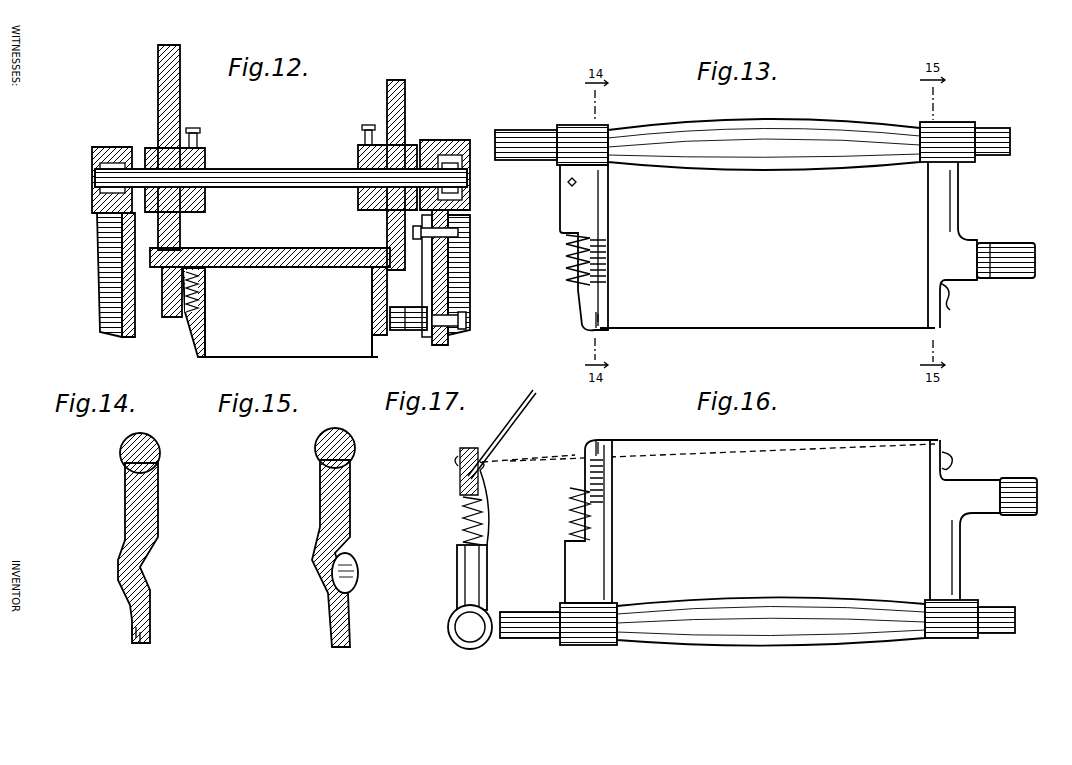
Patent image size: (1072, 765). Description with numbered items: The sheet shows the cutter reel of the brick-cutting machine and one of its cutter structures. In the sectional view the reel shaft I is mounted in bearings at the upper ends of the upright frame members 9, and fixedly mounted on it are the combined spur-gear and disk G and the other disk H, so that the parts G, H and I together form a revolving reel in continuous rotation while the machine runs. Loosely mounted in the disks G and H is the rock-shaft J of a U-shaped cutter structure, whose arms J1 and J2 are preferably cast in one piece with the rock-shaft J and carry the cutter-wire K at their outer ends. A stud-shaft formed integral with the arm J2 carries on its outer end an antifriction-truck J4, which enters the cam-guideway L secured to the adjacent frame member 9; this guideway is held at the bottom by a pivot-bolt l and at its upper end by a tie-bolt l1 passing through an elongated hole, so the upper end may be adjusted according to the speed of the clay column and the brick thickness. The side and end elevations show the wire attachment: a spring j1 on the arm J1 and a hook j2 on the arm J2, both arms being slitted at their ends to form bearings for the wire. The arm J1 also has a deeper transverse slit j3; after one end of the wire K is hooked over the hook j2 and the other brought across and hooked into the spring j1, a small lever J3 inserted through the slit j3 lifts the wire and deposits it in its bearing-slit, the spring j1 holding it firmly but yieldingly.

In FIG. 12, the combined spur-gear and disk G is at (181, 116).
In FIG. 12, the disk H is at (408, 108).
In FIG. 12, the reel shaft I is at (276, 168).
In FIG. 12, the rock-shaft J is at (318, 263).
In FIG. 13, the rock-shaft J is at (760, 167).
In FIG. 16, the rock-shaft J is at (768, 600).
In FIG. 12, the arm J1 is at (206, 303).
In FIG. 13, the arm J1 is at (609, 209).
In FIG. 14, the arm J1 is at (158, 512).
In FIG. 17, the arm J1 is at (457, 578).
In FIG. 16, the arm J1 is at (613, 552).
In FIG. 12, the arm J2 is at (371, 300).
In FIG. 13, the arm J2 is at (940, 213).
In FIG. 15, the arm J2 is at (330, 512).
In FIG. 16, the arm J2 is at (935, 553).
In FIG. 17, the small lever J3 is at (520, 402).
In FIG. 12, the antifriction-truck J4 is at (410, 332).
In FIG. 13, the antifriction-truck J4 is at (1015, 280).
In FIG. 16, the antifriction-truck J4 is at (1018, 516).
In FIG. 12, the cutter-wire K is at (292, 355).
In FIG. 13, the cutter-wire K is at (773, 326).
In FIG. 16, the cutter-wire K is at (766, 440).
In FIG. 12, the cam-guideway L is at (424, 298).
In FIG. 12, the pivot-bolt l is at (466, 321).
In FIG. 12, the tie-bolt l1 is at (462, 229).
In FIG. 12, the frame member 9 is at (470, 275).
In FIG. 12, the spring j1 is at (188, 313).
In FIG. 13, the spring j1 is at (568, 266).
In FIG. 17, the spring j1 is at (463, 523).
In FIG. 16, the spring j1 is at (570, 512).
In FIG. 13, the hook j2 is at (956, 306).
In FIG. 16, the hook j2 is at (957, 462).
In FIG. 13, the slit j3 is at (603, 317).
In FIG. 14, the slit j3 is at (128, 628).
In FIG. 16, the slit j3 is at (614, 456).